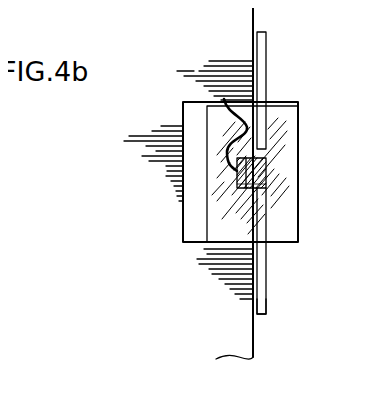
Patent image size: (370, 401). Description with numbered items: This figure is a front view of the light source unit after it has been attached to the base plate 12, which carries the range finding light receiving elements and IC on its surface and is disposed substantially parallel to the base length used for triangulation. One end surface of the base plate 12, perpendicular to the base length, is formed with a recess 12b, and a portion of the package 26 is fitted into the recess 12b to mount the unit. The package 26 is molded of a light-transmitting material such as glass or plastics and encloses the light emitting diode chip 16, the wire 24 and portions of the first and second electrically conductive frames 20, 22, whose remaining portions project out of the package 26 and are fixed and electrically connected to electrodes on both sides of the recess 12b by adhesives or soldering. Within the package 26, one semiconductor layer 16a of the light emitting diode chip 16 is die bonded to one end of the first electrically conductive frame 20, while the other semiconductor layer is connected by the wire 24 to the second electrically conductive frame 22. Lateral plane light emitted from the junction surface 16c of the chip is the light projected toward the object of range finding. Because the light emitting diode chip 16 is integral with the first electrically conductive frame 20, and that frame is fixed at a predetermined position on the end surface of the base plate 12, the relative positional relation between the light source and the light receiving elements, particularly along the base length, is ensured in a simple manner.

The base plate 12 is at (161, 47).
The recess 12b is at (190, 203).
The light emitting diode chip 16 is at (237, 177).
The semiconductor layer 16a is at (238, 191).
The junction surface 16c is at (243, 189).
The first electrically conductive frame 20 is at (265, 298).
The second electrically conductive frame 22 is at (265, 55).
The wire 24 is at (225, 101).
The package 26 is at (287, 222).